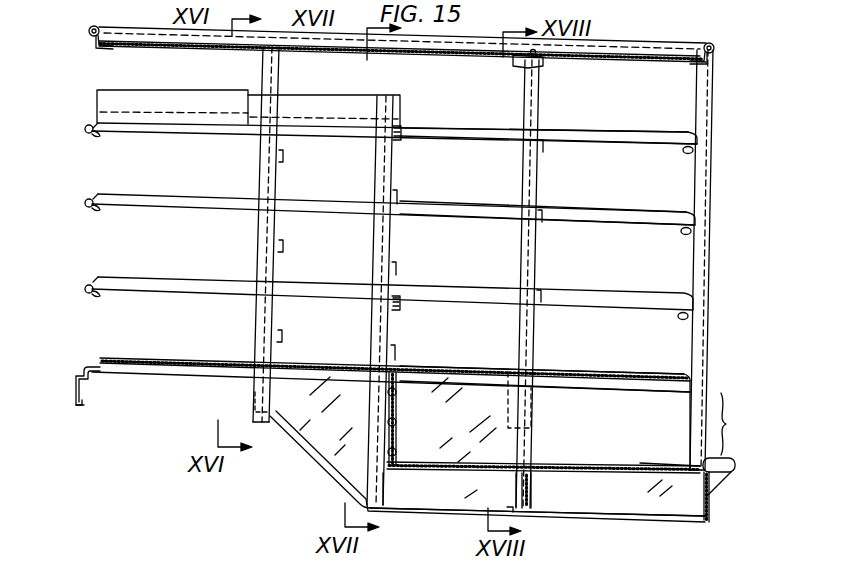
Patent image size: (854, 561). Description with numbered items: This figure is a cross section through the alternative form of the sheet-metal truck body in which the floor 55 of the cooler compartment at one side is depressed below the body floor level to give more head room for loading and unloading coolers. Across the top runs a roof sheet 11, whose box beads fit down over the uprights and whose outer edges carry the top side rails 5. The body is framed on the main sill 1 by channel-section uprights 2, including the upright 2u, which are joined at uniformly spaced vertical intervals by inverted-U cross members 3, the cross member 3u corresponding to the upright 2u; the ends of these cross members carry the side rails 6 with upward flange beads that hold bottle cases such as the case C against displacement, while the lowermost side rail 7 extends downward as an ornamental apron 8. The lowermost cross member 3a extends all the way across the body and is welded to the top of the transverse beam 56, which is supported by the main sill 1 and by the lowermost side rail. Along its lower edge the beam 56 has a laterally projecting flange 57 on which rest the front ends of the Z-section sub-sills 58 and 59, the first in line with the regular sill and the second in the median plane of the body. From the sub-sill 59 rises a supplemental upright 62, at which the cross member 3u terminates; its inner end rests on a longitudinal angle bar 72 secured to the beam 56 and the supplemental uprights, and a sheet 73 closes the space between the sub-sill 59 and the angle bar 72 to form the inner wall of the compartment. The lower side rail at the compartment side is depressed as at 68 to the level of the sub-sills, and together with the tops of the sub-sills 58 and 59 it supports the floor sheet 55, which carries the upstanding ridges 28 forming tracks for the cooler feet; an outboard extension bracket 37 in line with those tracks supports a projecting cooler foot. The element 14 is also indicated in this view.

The sill 1 is at (251, 398).
The upright 2 is at (531, 247).
The upright 2u is at (280, 244).
The cross member 3 is at (606, 131).
The cross member 3u is at (188, 133).
The lowermost cross member 3a is at (609, 372).
The top side rail 5 is at (88, 31).
The side rail 6 is at (85, 128).
The lowermost side rail 7 is at (70, 372).
The apron 8 is at (73, 398).
The roof sheet 11 is at (439, 57).
The inner member 14 is at (506, 430).
The upstanding ridge 28 is at (656, 462).
The outboard extension bracket 37 is at (736, 466).
The compartment floor 55 is at (594, 462).
The transverse beam 56 is at (466, 393).
The laterally-projecting flange 57 is at (461, 516).
The sub-sill 58 is at (527, 485).
The sub-sill 59 is at (381, 485).
The supplemental upright 62 is at (391, 241).
The depressed portion of side rail 68 is at (711, 505).
The longitudinal angle bar 72 is at (399, 133).
The sheet 73 is at (398, 414).
The bottle case C is at (170, 100).